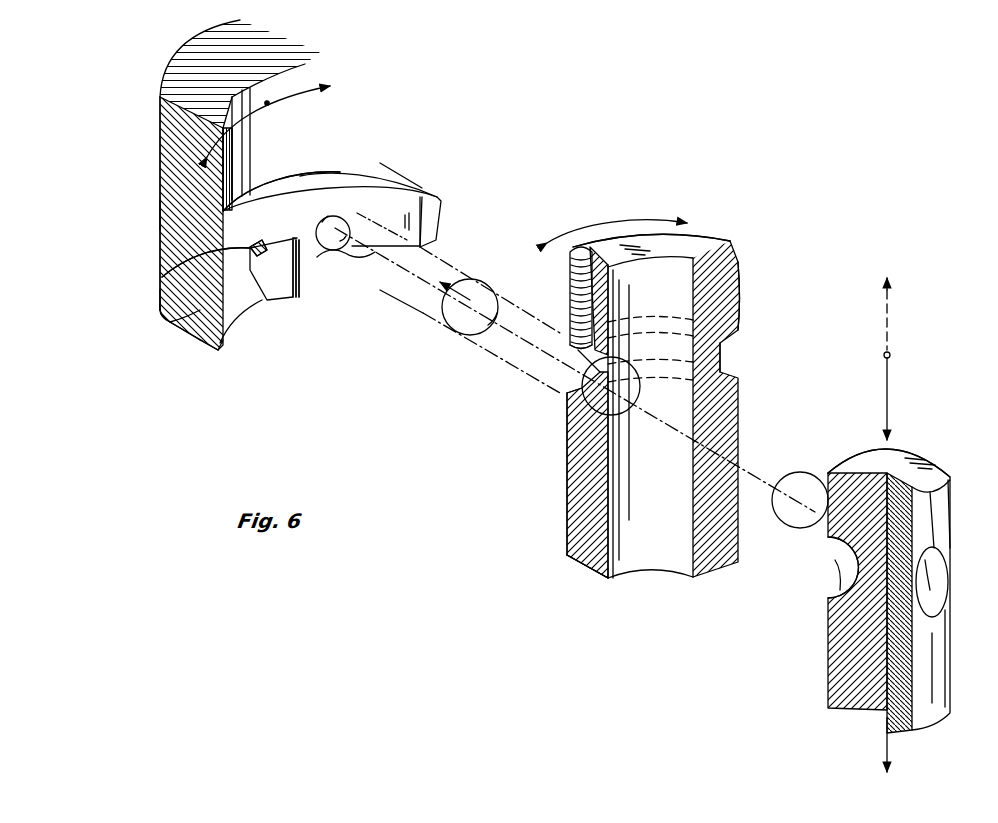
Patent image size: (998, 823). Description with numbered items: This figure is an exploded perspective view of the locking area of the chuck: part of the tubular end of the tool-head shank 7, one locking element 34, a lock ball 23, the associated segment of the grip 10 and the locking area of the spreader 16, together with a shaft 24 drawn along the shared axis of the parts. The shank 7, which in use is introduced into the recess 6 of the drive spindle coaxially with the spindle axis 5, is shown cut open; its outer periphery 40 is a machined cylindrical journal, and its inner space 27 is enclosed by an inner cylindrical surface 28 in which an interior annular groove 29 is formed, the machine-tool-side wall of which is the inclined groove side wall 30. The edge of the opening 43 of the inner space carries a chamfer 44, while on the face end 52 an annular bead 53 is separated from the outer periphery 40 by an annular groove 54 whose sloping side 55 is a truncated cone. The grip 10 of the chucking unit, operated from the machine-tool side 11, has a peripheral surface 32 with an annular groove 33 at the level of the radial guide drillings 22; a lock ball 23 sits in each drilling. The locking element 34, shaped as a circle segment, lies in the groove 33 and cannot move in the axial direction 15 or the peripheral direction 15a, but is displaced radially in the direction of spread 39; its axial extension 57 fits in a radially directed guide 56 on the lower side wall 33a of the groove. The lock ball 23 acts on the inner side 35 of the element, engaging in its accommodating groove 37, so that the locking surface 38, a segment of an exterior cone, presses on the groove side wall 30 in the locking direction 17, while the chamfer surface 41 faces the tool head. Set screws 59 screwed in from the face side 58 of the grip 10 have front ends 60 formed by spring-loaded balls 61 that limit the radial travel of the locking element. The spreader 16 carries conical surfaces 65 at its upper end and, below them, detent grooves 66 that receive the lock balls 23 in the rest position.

The axis of the drive spindle 5 is at (888, 440).
The recess 6 is at (137, 129).
The tool-head shank 7 is at (170, 160).
The grip 10 is at (573, 500).
The machine-tool side 11 is at (612, 655).
The axial direction 15 is at (890, 377).
The peripheral direction 15a is at (267, 103).
The spreader 16 is at (835, 655).
The locking direction 17 is at (886, 745).
The guide drilling 22 is at (618, 398).
The lock ball 23 is at (462, 318).
The shaft 24 is at (503, 337).
The inner space 27 is at (275, 378).
The inner cylindrical surface 28 is at (232, 155).
The interior annular groove 29 is at (270, 210).
The groove side wall 30 is at (165, 278).
The peripheral surface of the grip 32 is at (566, 450).
The annular groove 33 is at (736, 345).
The lower side wall of the annular groove 33a is at (725, 375).
The locking element 34 is at (340, 190).
The inner side of the locking element 35 is at (300, 268).
The accommodating groove 37 is at (333, 243).
The locking surface 38 is at (266, 306).
The direction of spread 39 is at (470, 300).
The outer periphery of the tool-head shank 40 is at (160, 207).
The chamfer surface 41 is at (260, 236).
The edge of the opening 43 is at (216, 352).
The chamfer 44 is at (200, 347).
The face end of the tool-head shank 52 is at (208, 352).
The annular bead 53 is at (167, 320).
The annular groove 54 is at (162, 307).
The sloping side 55 is at (165, 299).
The guide 56 is at (575, 390).
The axial extension 57 is at (368, 258).
The face side of the grip 58 is at (690, 243).
The set screw 59 is at (570, 292).
The front end of the set screw 60 is at (572, 341).
The ball 61 is at (590, 358).
The conical surface 65 is at (840, 538).
The detent groove 66 is at (833, 596).